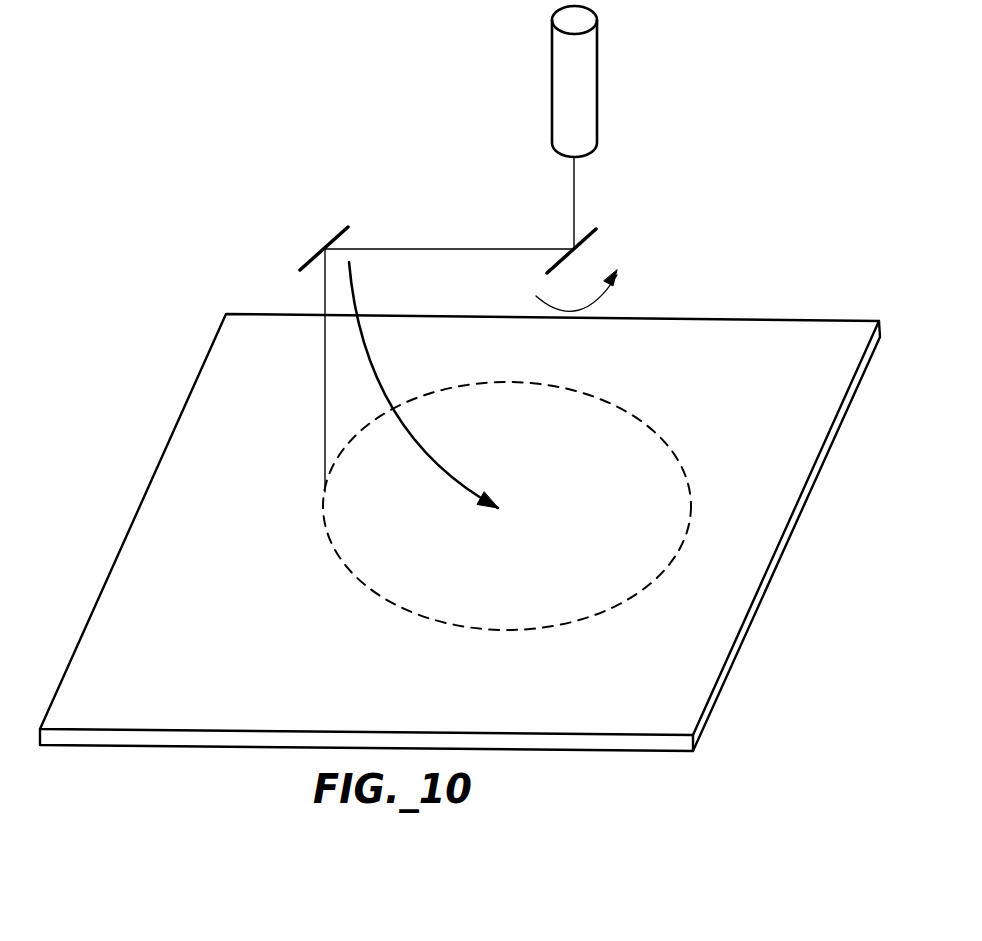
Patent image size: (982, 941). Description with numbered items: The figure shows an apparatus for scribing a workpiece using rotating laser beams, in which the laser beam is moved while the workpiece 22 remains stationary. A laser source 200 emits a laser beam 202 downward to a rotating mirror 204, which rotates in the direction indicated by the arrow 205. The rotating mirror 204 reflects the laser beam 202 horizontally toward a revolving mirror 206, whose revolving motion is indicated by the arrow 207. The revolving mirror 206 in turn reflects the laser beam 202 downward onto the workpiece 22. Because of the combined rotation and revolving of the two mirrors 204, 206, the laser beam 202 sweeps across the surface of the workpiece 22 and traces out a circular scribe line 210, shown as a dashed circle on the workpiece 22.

The workpiece 22 is at (185, 703).
The laser source 200 is at (550, 97).
The laser beam 202 is at (426, 249).
The rotating mirror 204 is at (588, 243).
The arrow 205 is at (613, 298).
The revolving mirror 206 is at (336, 233).
The arrow 207 is at (368, 322).
The circular scribe line 210 is at (622, 412).